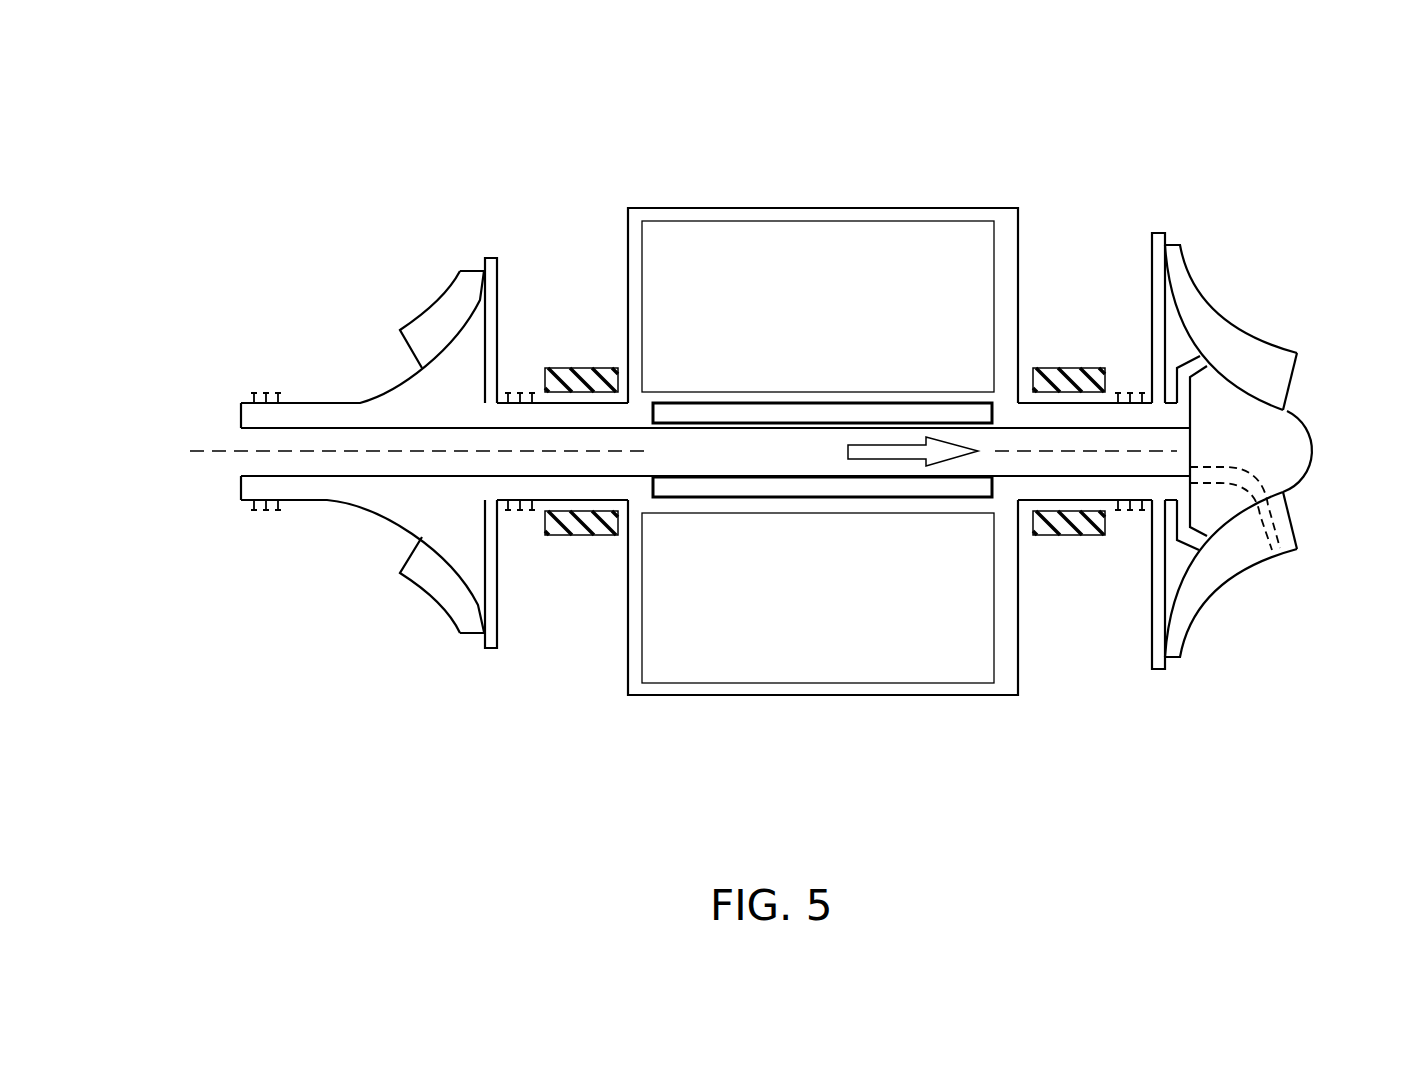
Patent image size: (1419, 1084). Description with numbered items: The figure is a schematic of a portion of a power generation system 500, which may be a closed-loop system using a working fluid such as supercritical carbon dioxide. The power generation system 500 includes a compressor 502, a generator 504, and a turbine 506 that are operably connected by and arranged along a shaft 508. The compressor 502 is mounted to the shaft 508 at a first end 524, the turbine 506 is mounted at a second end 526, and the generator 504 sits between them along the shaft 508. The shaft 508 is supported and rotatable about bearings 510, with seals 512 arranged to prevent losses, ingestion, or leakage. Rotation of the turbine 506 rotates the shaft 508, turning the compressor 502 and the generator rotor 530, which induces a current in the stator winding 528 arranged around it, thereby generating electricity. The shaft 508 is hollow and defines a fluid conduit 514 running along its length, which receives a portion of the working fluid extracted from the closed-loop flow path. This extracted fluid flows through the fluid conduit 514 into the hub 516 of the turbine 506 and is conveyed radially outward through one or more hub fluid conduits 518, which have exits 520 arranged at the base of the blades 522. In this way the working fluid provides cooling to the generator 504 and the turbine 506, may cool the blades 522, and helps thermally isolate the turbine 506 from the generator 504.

The power generation system 500 is at (240, 205).
The compressor 502 is at (407, 390).
The generator 504 is at (732, 200).
The turbine 506 is at (1160, 675).
The shaft 508 is at (255, 420).
The bearings 510 is at (572, 368).
The seals 512 is at (520, 395).
The fluid conduit 514 is at (797, 467).
The hub 516 is at (1283, 467).
The hub fluid conduits 518 is at (1208, 393).
The exits 520 is at (1208, 354).
The blades 522 is at (1263, 352).
The first end 524 is at (324, 665).
The second end 526 is at (1120, 756).
The stator winding 528 is at (841, 258).
The generator rotor 530 is at (720, 410).